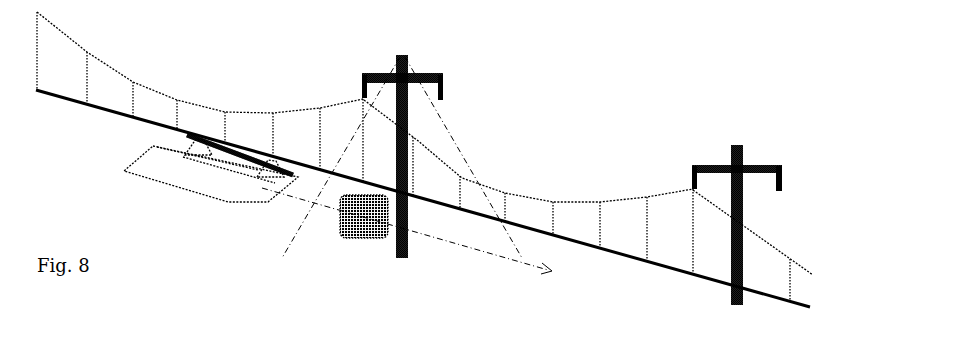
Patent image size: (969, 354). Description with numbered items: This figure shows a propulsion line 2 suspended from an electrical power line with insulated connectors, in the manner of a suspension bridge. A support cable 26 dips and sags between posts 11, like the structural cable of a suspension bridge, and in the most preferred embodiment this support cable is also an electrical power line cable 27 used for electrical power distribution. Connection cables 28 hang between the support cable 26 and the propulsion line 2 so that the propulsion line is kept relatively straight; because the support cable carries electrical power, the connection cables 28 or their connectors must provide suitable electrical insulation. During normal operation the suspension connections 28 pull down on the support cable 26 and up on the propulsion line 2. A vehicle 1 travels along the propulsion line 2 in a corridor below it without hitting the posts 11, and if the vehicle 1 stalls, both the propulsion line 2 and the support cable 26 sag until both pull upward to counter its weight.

The vehicle 1 is at (211, 169).
The propulsion line 2 is at (423, 198).
The posts 11 is at (522, 180).
The support cable 26 is at (200, 59).
The electrical power line cable 27 is at (485, 178).
The connection cables 28 is at (413, 156).